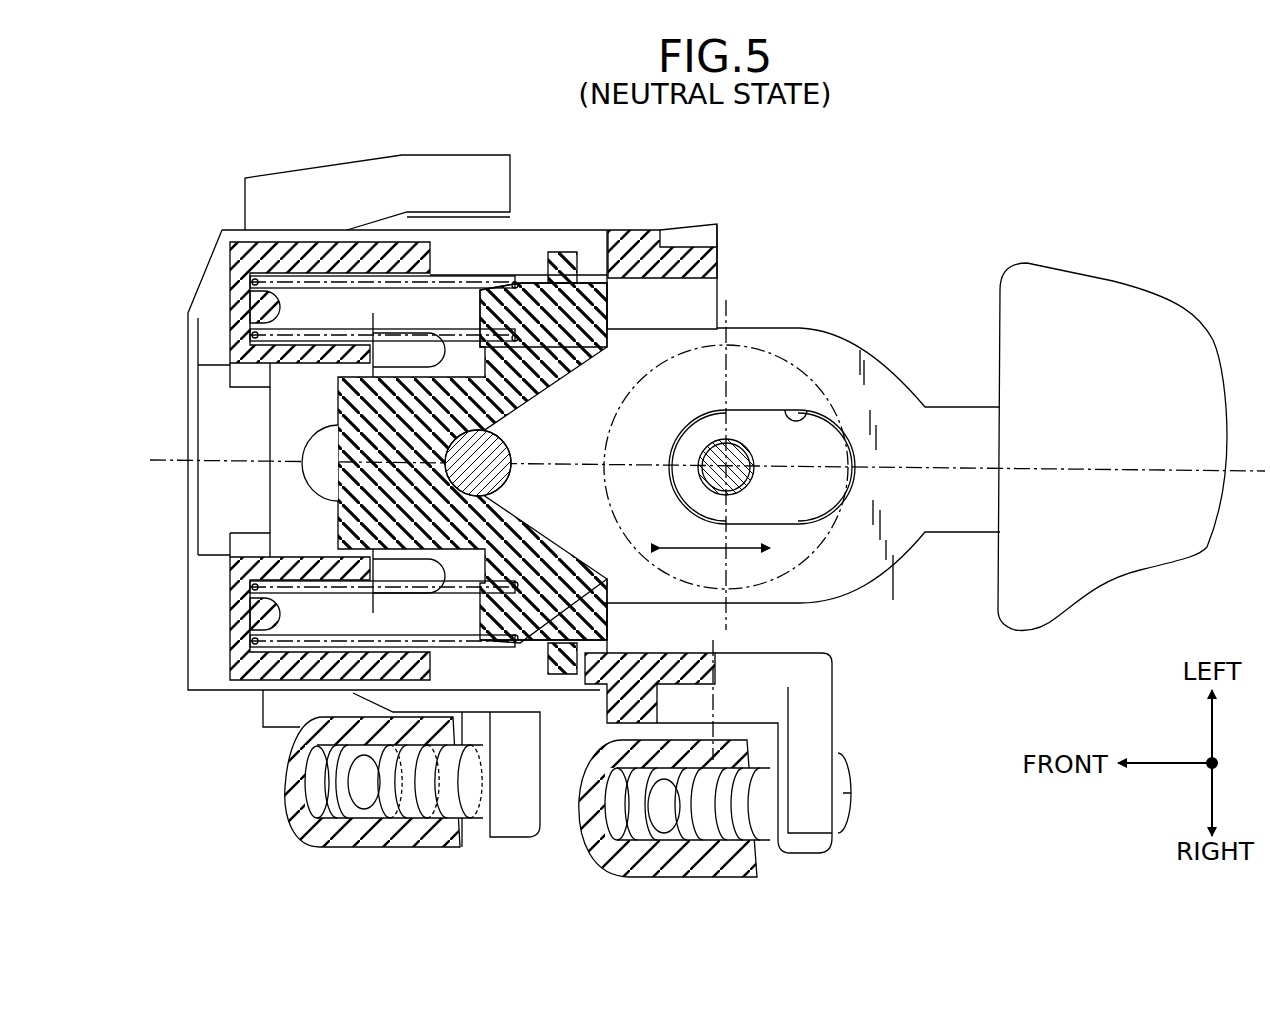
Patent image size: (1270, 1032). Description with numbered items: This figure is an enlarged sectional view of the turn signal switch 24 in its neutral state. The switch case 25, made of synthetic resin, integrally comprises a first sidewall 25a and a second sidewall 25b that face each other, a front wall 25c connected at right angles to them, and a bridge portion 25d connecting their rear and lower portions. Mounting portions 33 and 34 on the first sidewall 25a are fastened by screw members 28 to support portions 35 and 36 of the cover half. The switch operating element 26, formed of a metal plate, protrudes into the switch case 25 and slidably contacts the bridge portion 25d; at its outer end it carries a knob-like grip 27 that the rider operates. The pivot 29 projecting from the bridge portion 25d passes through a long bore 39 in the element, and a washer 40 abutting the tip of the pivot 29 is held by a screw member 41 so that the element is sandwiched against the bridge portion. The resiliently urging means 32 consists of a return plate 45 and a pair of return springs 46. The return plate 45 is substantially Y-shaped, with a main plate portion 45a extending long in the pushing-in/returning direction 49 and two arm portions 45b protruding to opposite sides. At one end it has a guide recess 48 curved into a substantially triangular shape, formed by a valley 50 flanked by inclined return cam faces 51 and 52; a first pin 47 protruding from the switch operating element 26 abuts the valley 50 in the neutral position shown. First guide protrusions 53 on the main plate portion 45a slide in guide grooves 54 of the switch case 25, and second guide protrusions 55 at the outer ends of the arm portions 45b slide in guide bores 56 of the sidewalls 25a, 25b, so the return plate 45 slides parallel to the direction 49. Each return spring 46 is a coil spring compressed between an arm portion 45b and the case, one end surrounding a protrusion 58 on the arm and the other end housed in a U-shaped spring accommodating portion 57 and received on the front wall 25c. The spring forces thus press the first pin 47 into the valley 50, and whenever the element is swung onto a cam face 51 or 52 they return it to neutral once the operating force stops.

The turn signal switch 24 is at (857, 337).
The switch case 25 is at (191, 697).
The first sidewall 25a is at (303, 694).
The second sidewall 25b is at (716, 262).
The front wall 25c is at (160, 462).
The bridge portion 25d is at (823, 598).
The switch operating element 26 is at (945, 406).
The knob 27 is at (1112, 303).
The screw member 28 is at (368, 797).
The pivot 29 is at (770, 451).
The resiliently urging means 32 is at (489, 272).
The mounting portion 33 is at (500, 826).
The mounting portion 34 is at (828, 727).
The support portion 35 is at (393, 847).
The support portion 36 is at (687, 858).
The long bore 39 is at (817, 408).
The washer 40 is at (717, 322).
The screw member 41 is at (752, 490).
The return plate 45 is at (333, 411).
The main plate portion 45a is at (323, 495).
The arm portion 45b is at (601, 297).
The return spring 46 is at (277, 262).
The first pin 47 is at (510, 511).
The guide recess 48 is at (607, 467).
The pushing-in/returning direction 49 is at (735, 555).
The valley 50 is at (503, 448).
The return cam face 51 is at (565, 562).
The return cam face 52 is at (612, 348).
The first guide protrusion 53 is at (352, 346).
The guide groove 54 is at (278, 370).
The second guide protrusion 55 is at (563, 260).
The guide bore 56 is at (517, 262).
The spring accommodating portion 57 is at (290, 340).
The protrusion 58 is at (410, 277).